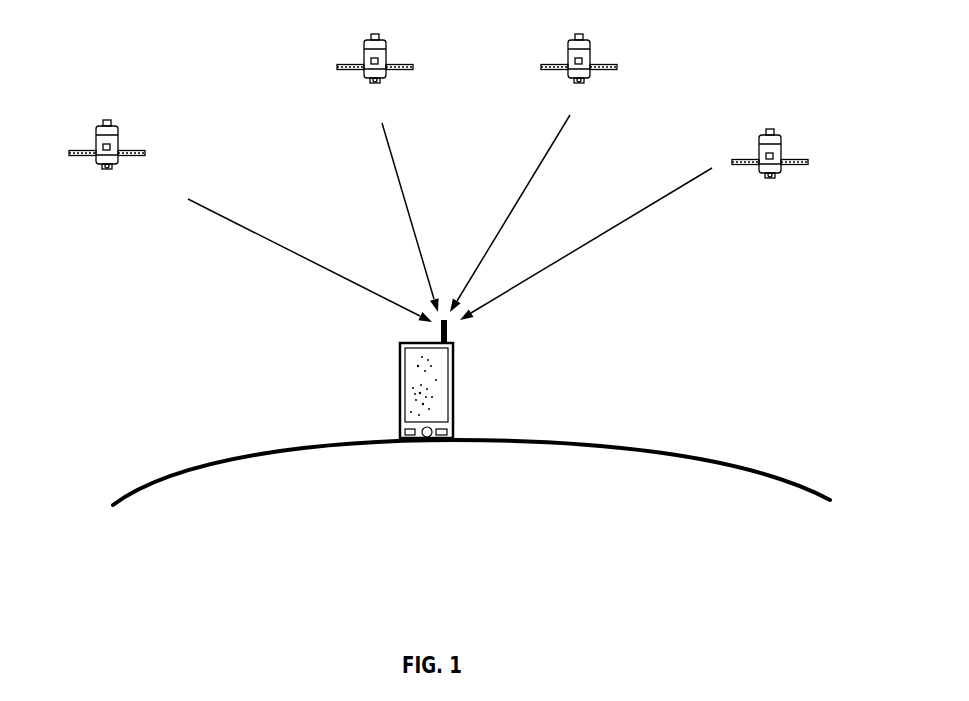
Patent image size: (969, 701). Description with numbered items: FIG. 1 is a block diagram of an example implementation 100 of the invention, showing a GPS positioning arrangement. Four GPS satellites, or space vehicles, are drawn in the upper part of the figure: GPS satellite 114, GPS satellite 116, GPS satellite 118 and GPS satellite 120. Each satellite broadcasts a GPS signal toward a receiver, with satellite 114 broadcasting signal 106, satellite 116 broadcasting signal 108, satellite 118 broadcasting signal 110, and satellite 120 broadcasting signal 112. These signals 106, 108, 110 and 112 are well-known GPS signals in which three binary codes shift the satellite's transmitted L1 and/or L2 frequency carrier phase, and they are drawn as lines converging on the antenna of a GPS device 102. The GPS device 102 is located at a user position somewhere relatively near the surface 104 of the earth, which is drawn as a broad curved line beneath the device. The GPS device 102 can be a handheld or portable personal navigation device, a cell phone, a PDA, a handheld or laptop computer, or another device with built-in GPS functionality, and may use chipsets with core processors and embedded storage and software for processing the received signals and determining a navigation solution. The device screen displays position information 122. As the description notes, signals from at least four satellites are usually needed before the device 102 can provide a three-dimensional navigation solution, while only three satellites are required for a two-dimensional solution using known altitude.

The GPS positioning system 100 is at (701, 83).
The GPS device 102 is at (453, 403).
The surface of earth 104 is at (352, 450).
The signal 106 is at (293, 253).
The signal 108 is at (398, 180).
The signal 110 is at (525, 187).
The signal 112 is at (565, 252).
The GPS satellite 114 is at (109, 158).
The GPS satellite 116 is at (375, 72).
The GPS satellite 118 is at (580, 72).
The GPS satellite 120 is at (770, 167).
The displayed position data on device screen 122 is at (417, 372).